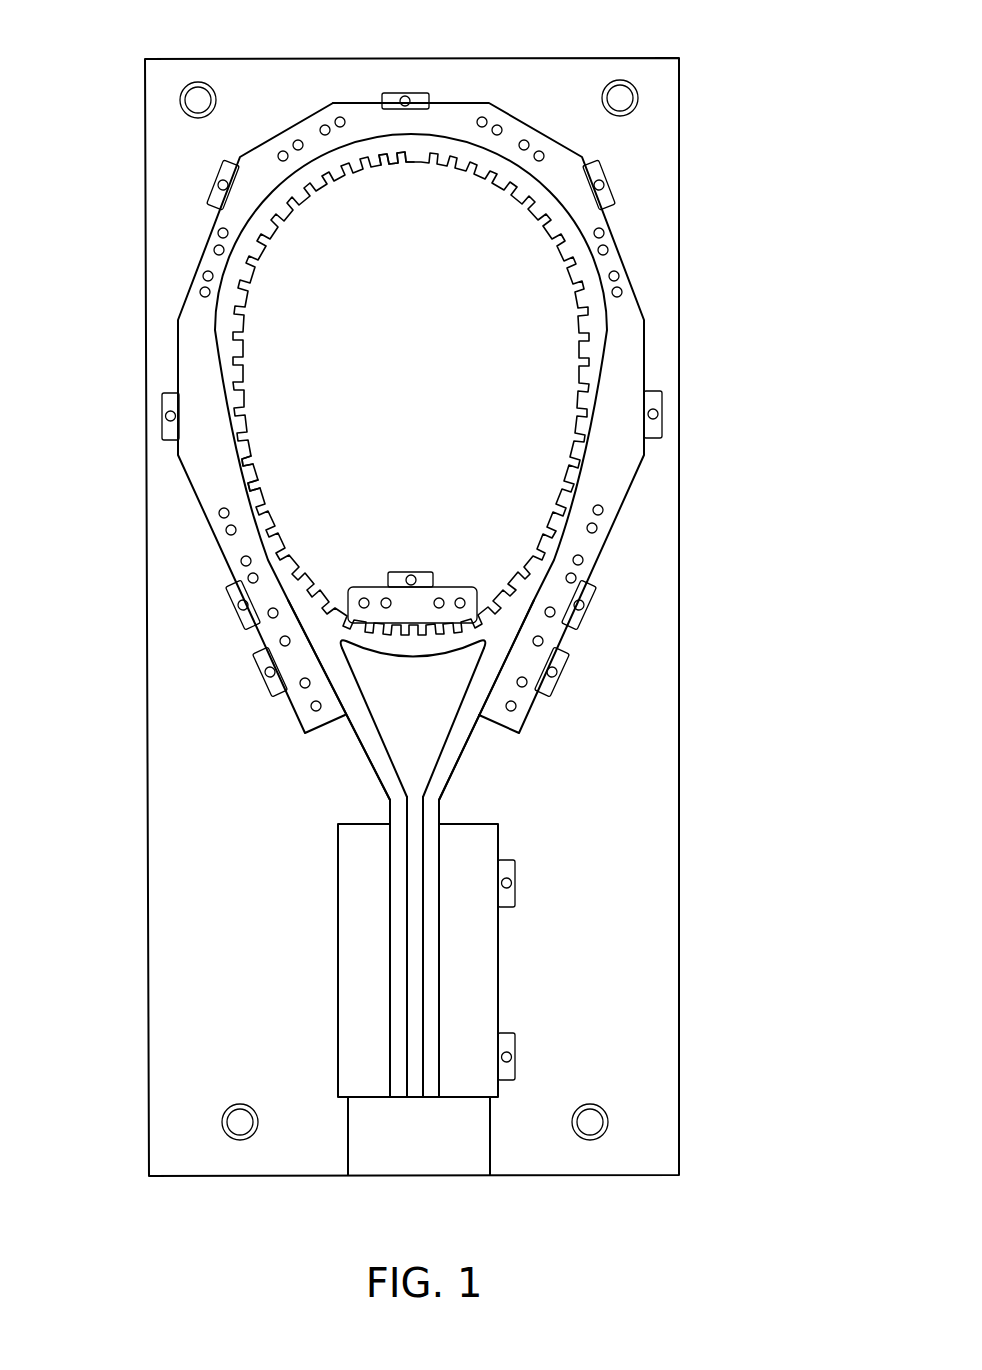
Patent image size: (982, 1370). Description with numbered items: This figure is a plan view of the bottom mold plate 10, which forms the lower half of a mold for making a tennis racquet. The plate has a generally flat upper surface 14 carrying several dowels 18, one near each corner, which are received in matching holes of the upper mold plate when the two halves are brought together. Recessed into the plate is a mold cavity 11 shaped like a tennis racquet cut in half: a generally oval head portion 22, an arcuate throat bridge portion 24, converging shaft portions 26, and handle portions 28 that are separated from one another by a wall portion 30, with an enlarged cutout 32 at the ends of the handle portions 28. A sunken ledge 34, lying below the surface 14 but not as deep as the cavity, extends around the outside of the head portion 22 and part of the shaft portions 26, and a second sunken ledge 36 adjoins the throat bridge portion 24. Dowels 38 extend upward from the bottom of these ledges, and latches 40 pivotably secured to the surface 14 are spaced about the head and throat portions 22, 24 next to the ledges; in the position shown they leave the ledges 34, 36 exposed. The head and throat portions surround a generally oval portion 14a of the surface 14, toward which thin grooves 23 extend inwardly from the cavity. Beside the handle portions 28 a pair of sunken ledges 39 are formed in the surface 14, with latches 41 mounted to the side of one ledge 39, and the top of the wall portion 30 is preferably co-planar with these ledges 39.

The mold plate 10 is at (680, 883).
The mold cavity 11 is at (407, 143).
The upper surface 14 is at (553, 881).
The oval portion 14a is at (386, 368).
The dowels 18 is at (180, 100).
The head portion 22 is at (526, 195).
The thin grooves 23 is at (264, 487).
The throat bridge portion 24 is at (396, 652).
The shaft portions 26 is at (368, 745).
The handle portions 28 is at (397, 950).
The wall portion 30 is at (427, 838).
The enlarged cutout 32 is at (467, 1160).
The sunken ledge 34 is at (210, 478).
The second sunken ledge 36 is at (428, 606).
The dowels 38 is at (606, 508).
The sunken ledges 39 is at (352, 993).
The latches 40 is at (410, 93).
The latches 41 is at (512, 860).